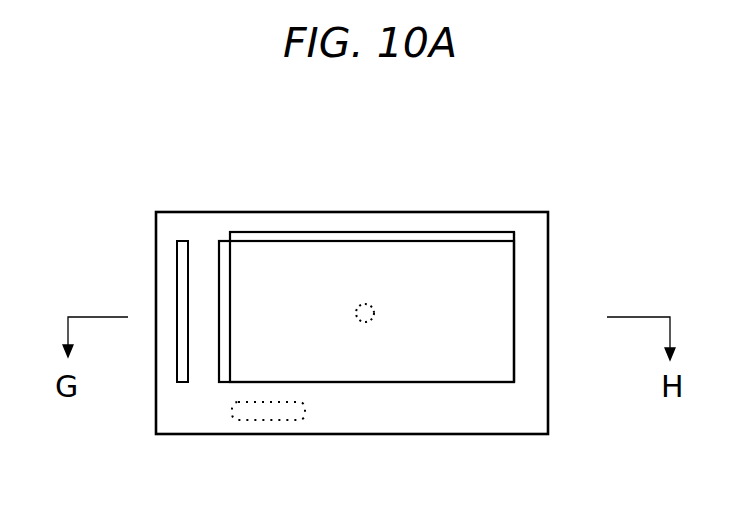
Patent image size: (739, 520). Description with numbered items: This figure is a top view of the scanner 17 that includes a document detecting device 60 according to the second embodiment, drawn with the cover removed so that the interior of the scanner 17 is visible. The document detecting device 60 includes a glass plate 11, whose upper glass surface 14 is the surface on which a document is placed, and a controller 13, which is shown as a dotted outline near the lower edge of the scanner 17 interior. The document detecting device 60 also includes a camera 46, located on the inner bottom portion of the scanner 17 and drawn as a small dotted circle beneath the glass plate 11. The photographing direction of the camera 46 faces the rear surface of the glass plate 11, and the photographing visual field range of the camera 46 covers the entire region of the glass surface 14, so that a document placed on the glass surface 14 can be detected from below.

The document detecting device 60 is at (218, 197).
The scanner 17 is at (549, 246).
The glass surface 14 is at (462, 362).
The glass plate 11 is at (510, 317).
The camera 46 is at (370, 323).
The controller 13 is at (250, 423).